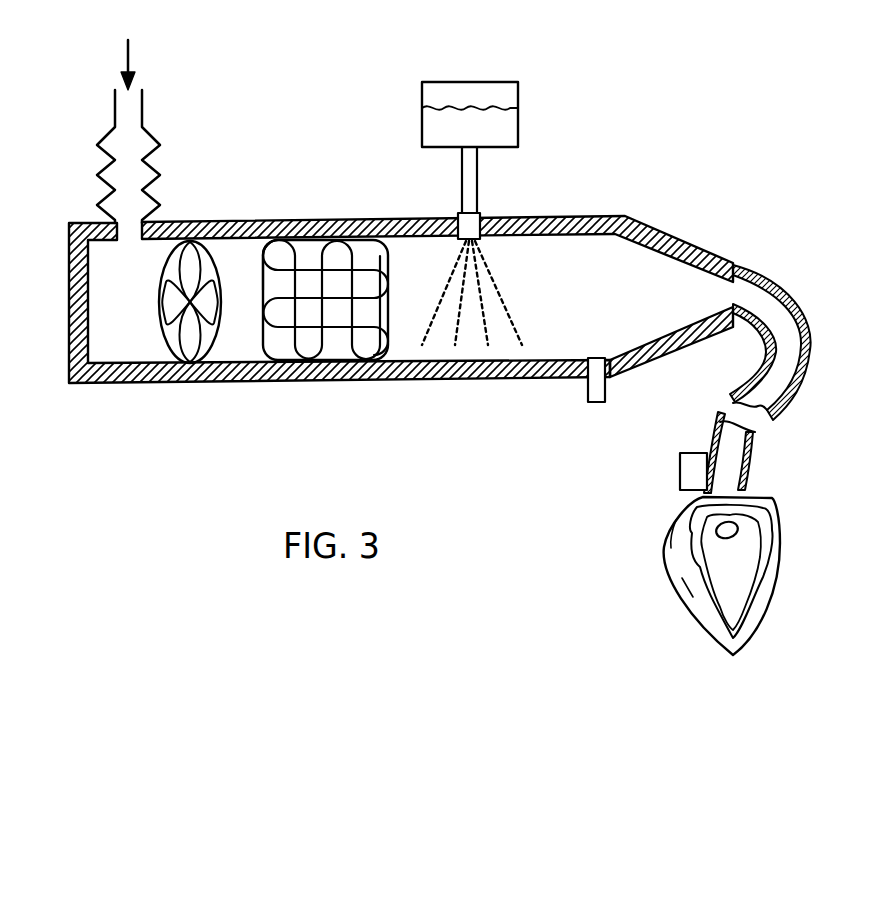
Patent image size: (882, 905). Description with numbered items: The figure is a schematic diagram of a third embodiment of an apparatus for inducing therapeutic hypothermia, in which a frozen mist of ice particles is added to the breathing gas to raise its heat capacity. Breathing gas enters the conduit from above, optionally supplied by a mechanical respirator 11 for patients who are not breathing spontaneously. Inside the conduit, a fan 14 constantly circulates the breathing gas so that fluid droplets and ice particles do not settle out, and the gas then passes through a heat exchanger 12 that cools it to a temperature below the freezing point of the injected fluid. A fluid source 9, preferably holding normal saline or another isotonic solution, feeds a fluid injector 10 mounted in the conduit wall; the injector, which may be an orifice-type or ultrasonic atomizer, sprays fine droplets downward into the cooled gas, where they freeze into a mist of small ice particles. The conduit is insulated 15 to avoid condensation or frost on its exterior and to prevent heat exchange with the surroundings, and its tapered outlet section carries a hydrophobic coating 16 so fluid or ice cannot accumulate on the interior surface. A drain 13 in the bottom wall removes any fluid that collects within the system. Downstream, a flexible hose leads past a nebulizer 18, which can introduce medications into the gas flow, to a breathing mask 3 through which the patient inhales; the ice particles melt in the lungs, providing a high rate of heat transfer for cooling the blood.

The breathing mask 3 is at (775, 512).
The fluid source 9 is at (518, 92).
The fluid injector 10 is at (478, 215).
The mechanical respirator 11 is at (160, 145).
The heat exchanger 12 is at (338, 360).
The drain 13 is at (588, 390).
The fan 14 is at (190, 363).
The insulation 15 is at (277, 232).
The hydrophobic coating 16 is at (636, 238).
The nebulizer 18 is at (690, 473).